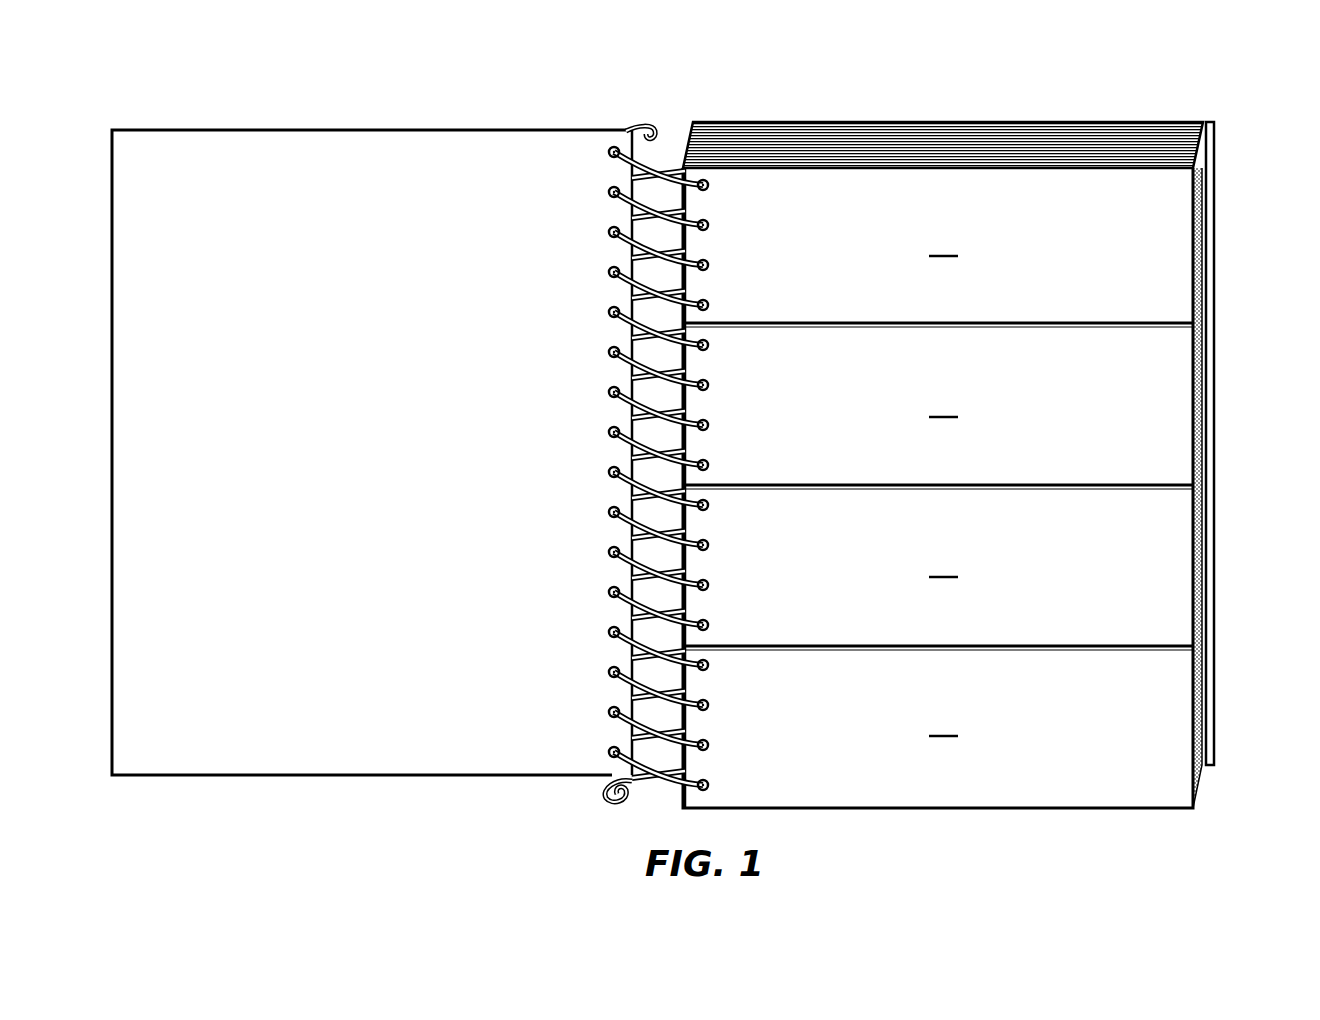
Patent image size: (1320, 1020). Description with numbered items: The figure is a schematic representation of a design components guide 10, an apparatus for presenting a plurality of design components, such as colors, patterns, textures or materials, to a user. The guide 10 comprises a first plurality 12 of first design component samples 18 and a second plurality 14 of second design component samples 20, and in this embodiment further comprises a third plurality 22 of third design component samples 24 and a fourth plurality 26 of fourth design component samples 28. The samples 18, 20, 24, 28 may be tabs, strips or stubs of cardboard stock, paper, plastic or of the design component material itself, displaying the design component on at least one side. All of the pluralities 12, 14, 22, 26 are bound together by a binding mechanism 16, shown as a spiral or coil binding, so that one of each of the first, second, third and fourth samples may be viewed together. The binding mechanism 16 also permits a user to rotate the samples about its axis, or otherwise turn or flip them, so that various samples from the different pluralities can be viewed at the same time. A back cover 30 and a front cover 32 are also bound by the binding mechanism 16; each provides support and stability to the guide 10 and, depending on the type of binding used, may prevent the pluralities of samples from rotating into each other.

The design components guide 10 is at (922, 58).
The first plurality of first design component samples 12 is at (1218, 122).
The second plurality of second design component samples 14 is at (1218, 326).
The binding mechanism 16 is at (666, 162).
The first design component samples 18 is at (945, 244).
The second design component samples 20 is at (945, 405).
The third plurality of third design component samples 22 is at (1218, 488).
The third design component samples 24 is at (945, 565).
The fourth plurality of fourth design component samples 26 is at (1218, 649).
The fourth design component samples 28 is at (945, 724).
The back cover 30 is at (1205, 122).
The front cover 32 is at (366, 148).